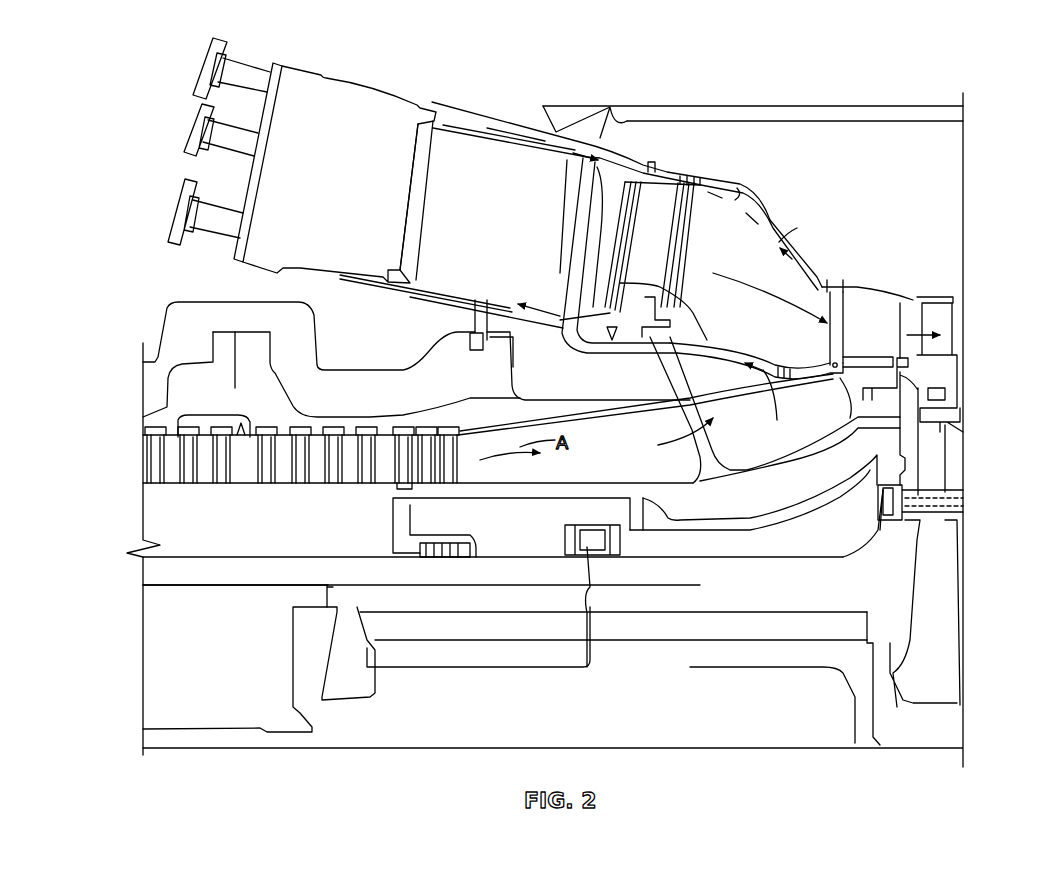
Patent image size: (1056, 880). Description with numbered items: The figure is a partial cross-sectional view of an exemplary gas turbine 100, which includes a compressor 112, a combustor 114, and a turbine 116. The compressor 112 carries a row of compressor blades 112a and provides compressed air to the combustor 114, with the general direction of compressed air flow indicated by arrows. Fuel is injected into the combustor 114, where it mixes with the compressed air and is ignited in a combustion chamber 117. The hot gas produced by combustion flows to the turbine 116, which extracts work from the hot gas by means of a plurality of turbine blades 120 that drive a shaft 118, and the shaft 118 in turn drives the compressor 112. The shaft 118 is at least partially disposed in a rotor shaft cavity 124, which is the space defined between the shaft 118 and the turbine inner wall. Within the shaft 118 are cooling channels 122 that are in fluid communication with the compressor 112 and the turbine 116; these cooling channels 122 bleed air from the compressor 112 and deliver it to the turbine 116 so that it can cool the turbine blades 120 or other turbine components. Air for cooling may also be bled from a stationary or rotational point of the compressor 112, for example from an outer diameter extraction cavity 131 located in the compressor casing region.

The gas turbine 100 is at (183, 66).
The compressor 112 is at (140, 556).
The compressor blades 112a is at (167, 464).
The combustor 114 is at (600, 162).
The turbine 116 is at (950, 665).
The combustion chamber 117 is at (660, 247).
The shaft 118 is at (511, 621).
The turbine blades 120 is at (953, 318).
The cooling channels 122 is at (468, 612).
The rotor shaft cavity 124 is at (710, 447).
The outer diameter extraction cavity 131 is at (195, 400).